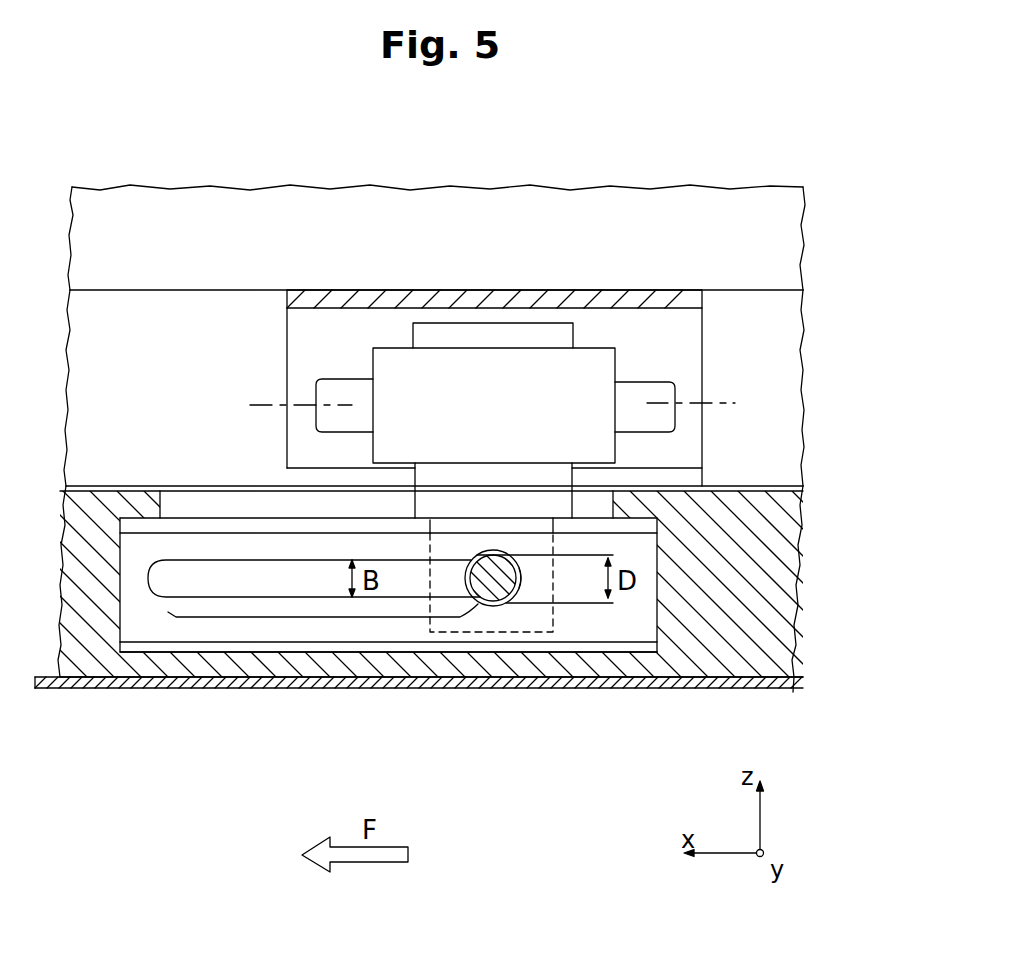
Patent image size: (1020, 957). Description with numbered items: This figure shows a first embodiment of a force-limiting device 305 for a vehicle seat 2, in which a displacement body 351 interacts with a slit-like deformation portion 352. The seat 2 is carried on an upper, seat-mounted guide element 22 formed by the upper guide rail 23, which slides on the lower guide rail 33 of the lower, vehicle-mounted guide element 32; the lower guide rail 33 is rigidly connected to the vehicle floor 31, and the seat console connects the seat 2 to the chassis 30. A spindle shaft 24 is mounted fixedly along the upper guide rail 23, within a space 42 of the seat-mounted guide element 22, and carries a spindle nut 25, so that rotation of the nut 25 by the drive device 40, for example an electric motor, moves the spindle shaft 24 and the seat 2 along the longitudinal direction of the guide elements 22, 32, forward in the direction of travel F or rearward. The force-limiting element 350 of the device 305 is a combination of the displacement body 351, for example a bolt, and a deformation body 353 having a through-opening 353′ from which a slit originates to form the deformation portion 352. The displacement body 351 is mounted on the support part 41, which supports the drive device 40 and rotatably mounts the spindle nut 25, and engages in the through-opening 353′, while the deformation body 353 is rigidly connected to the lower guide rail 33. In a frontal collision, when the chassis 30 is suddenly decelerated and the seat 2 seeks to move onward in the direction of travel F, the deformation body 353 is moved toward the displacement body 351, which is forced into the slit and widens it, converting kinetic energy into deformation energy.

The vehicle seat 2 is at (758, 230).
The upper, seat-mounted guide element 22 is at (804, 447).
The upper guide rail 23 is at (783, 357).
The spindle shaft 24 is at (634, 403).
The spindle nut 25 is at (587, 367).
The chassis 30 is at (638, 688).
The vehicle floor 31 is at (773, 692).
The lower, vehicle-mounted guide element 32 is at (796, 615).
The lower guide rail 33 is at (770, 545).
The drive device 40 is at (455, 485).
The support part 41 is at (520, 518).
The cavity 42 is at (350, 353).
The force-limiting device 305 is at (202, 509).
The force-limiting element 350 is at (258, 531).
The displacement body 351 is at (515, 598).
The deformation portion 352 is at (315, 616).
The deformation body 353 is at (193, 652).
The through-opening 353′ is at (521, 580).